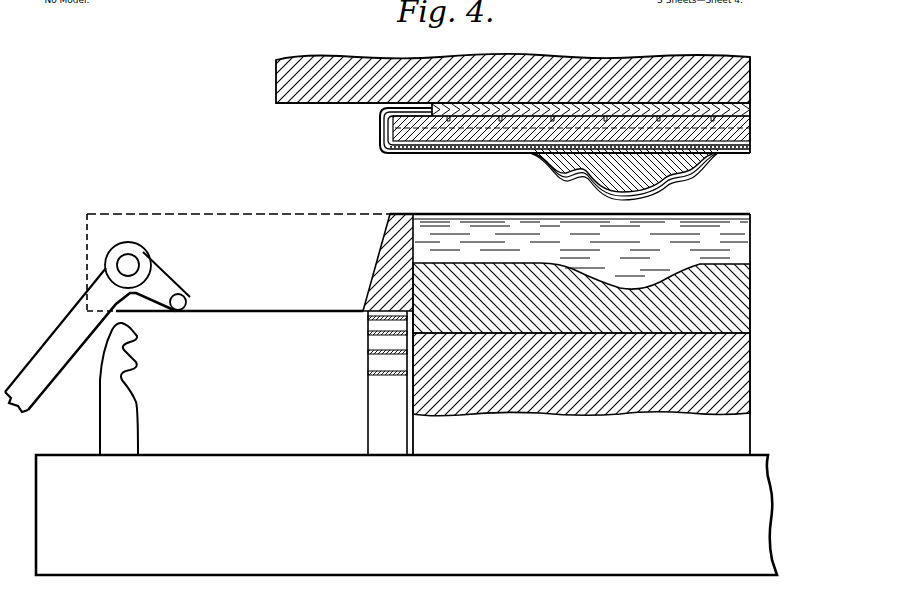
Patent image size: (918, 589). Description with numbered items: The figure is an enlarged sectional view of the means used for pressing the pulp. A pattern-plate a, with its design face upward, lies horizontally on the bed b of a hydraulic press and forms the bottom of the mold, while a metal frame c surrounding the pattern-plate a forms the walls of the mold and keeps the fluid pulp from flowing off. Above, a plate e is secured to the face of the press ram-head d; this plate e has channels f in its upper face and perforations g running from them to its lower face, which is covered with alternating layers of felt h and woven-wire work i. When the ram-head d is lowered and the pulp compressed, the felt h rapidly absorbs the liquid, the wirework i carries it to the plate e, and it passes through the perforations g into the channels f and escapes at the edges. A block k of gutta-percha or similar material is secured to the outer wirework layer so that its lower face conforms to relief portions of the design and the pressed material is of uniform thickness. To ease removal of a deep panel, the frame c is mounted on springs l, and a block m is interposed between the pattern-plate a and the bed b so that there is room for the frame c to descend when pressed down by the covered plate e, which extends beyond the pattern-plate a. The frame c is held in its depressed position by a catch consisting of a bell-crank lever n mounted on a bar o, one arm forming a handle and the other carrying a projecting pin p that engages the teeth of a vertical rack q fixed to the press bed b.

The pattern-plate a is at (728, 317).
The bed b is at (406, 515).
The metal frame c is at (388, 266).
The press ram-head d is at (352, 93).
The plate e is at (750, 118).
The channels f is at (500, 133).
The perforations g is at (652, 170).
The felt h is at (437, 154).
The woven-wire work i is at (706, 155).
The block k is at (590, 170).
The springs l is at (378, 363).
The block m is at (726, 386).
The bell-crank lever n is at (97, 332).
The bar o is at (136, 260).
The projecting pin p is at (185, 297).
The vertical rack q is at (120, 411).